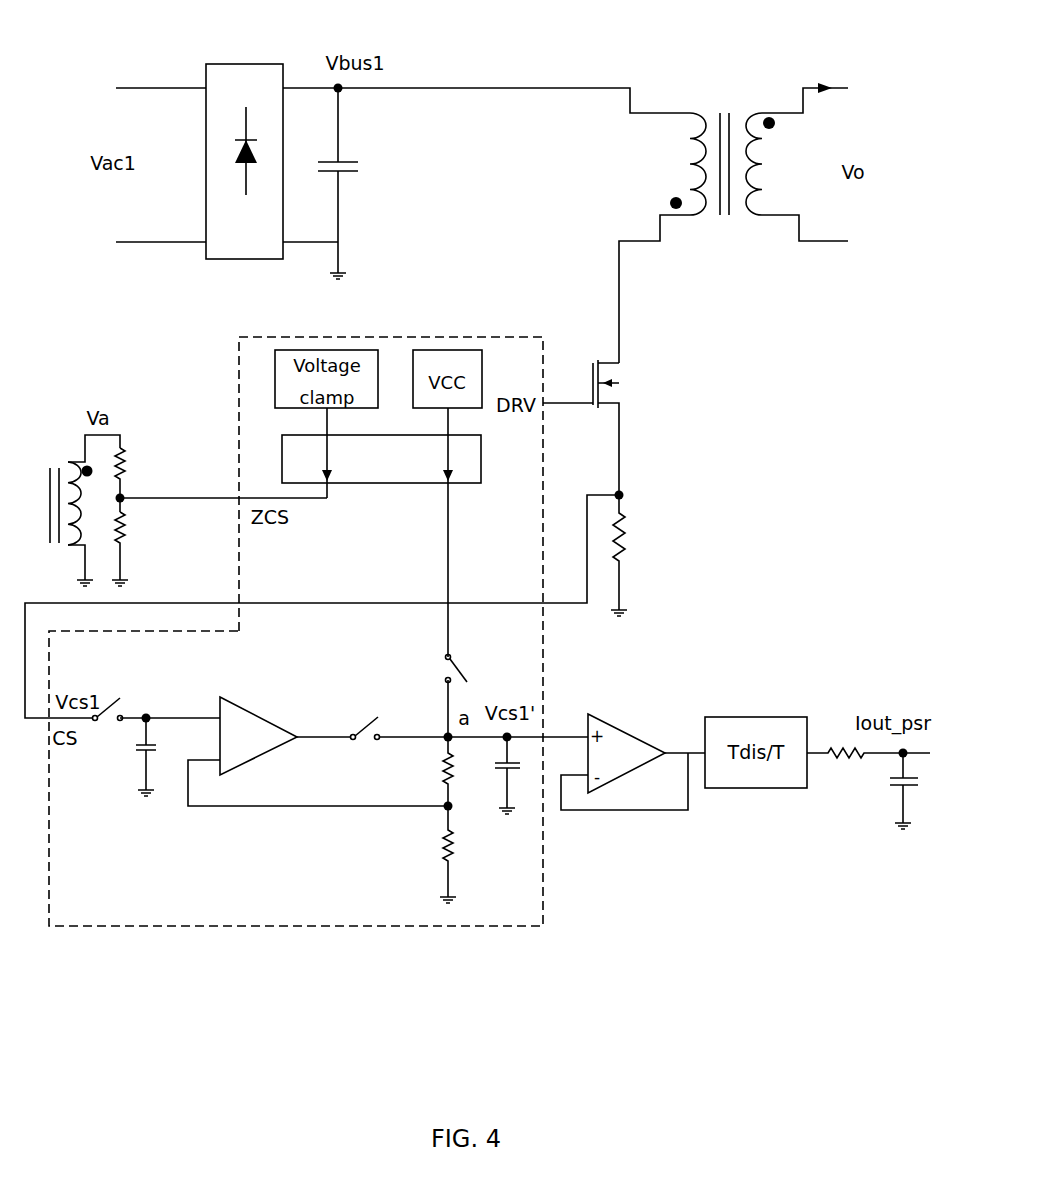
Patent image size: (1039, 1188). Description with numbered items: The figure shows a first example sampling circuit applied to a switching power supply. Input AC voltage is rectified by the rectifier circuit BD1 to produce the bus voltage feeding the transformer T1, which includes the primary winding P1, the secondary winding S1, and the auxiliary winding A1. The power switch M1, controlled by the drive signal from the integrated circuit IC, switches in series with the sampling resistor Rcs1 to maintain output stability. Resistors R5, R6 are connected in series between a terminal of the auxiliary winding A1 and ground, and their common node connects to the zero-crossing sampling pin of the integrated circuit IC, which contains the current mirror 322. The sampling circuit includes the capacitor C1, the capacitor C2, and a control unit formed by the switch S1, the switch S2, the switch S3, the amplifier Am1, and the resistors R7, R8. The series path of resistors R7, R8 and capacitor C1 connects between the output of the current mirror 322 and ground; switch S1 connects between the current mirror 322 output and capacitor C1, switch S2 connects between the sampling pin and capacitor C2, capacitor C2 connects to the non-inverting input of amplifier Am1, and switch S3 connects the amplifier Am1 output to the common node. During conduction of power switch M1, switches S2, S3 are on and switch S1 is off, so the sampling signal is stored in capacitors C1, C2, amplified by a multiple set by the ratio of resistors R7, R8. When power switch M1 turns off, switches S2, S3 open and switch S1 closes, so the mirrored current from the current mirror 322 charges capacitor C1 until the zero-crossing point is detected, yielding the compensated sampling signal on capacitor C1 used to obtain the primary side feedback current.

The current mirror 322 is at (385, 485).
The rectifier circuit BD1 is at (251, 64).
The transformer T1 is at (615, 382).
The primary winding P1 is at (683, 164).
The secondary winding S1 is at (615, 398).
The power switch M1 is at (581, 427).
The sampling resistor Rcs1 is at (648, 555).
The integrated circuit IC is at (380, 335).
The auxiliary winding A1 is at (85, 510).
The resistor R5 is at (136, 480).
The resistor R6 is at (136, 549).
The switch S2 is at (108, 723).
The capacitor C2 is at (163, 757).
The amplifier Am1 is at (258, 736).
The switch S3 is at (366, 746).
The resistor R7 is at (431, 743).
The resistor R8 is at (432, 854).
The capacitor C1 is at (492, 775).